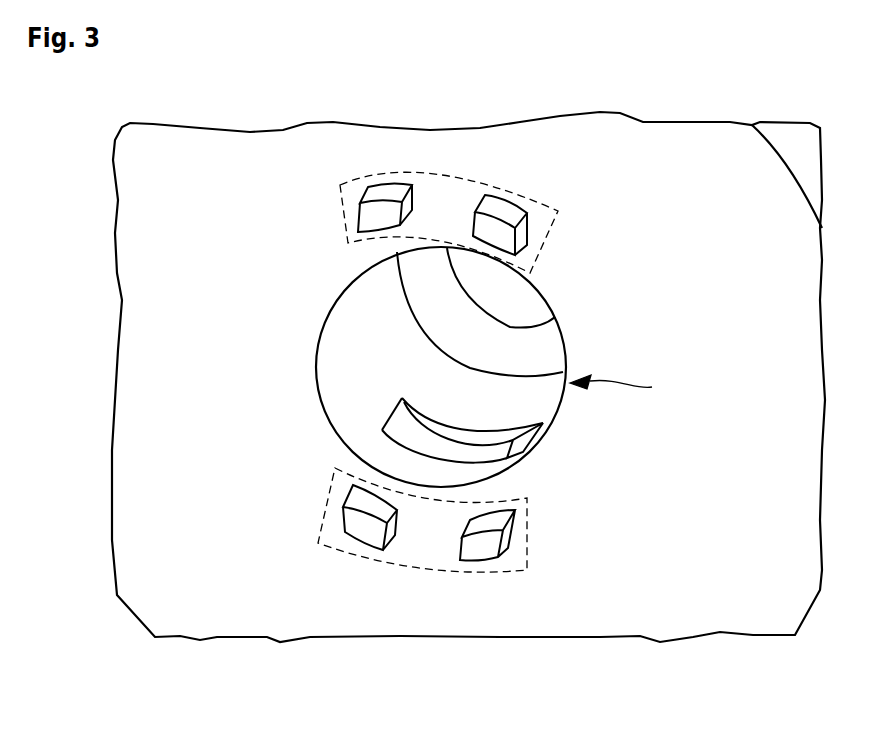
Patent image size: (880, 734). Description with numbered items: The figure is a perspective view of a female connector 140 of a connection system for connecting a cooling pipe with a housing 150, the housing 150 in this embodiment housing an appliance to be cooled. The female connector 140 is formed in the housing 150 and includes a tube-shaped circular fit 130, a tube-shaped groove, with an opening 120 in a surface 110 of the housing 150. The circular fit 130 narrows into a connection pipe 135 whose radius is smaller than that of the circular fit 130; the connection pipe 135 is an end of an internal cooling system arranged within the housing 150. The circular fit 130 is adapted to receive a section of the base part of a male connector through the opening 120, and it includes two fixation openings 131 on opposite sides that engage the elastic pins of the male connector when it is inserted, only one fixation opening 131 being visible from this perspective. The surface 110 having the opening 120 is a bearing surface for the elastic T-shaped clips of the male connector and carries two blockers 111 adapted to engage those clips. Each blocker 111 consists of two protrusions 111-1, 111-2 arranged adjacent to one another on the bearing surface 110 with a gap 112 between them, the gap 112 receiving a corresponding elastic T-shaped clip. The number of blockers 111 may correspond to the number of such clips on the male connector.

The surface 110 is at (700, 542).
The blocker 111 is at (548, 238).
The protrusion 111-1 is at (388, 208).
The protrusion 111-2 is at (512, 213).
The gap 112 is at (453, 210).
The opening 120 is at (340, 283).
The tube-shaped circular fit 130 is at (340, 365).
The fixation opening 131 is at (503, 453).
The connection pipe 135 is at (510, 292).
The female connector 140 is at (629, 386).
The housing 150 is at (690, 319).